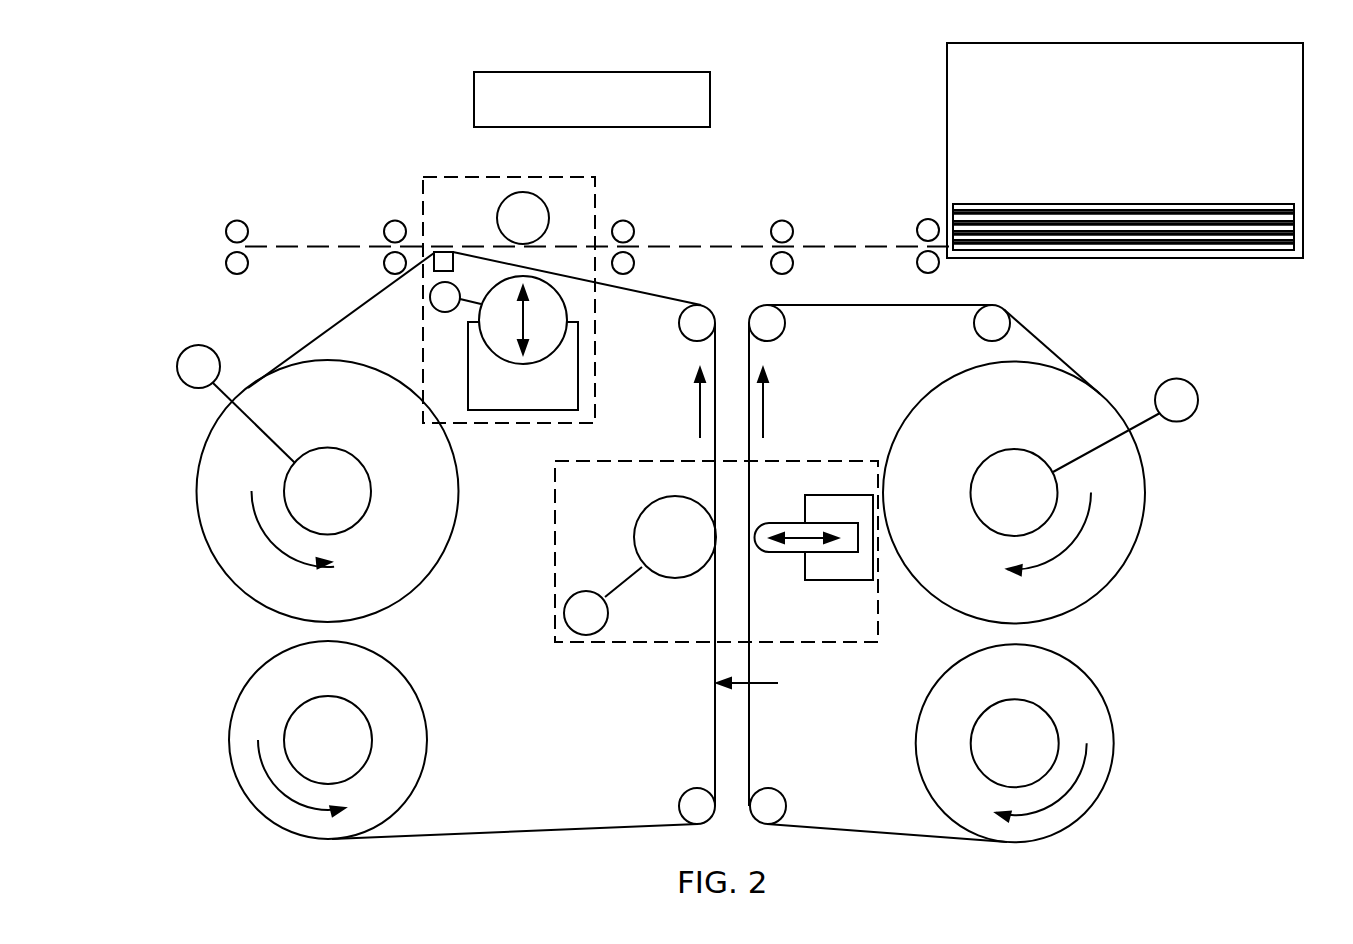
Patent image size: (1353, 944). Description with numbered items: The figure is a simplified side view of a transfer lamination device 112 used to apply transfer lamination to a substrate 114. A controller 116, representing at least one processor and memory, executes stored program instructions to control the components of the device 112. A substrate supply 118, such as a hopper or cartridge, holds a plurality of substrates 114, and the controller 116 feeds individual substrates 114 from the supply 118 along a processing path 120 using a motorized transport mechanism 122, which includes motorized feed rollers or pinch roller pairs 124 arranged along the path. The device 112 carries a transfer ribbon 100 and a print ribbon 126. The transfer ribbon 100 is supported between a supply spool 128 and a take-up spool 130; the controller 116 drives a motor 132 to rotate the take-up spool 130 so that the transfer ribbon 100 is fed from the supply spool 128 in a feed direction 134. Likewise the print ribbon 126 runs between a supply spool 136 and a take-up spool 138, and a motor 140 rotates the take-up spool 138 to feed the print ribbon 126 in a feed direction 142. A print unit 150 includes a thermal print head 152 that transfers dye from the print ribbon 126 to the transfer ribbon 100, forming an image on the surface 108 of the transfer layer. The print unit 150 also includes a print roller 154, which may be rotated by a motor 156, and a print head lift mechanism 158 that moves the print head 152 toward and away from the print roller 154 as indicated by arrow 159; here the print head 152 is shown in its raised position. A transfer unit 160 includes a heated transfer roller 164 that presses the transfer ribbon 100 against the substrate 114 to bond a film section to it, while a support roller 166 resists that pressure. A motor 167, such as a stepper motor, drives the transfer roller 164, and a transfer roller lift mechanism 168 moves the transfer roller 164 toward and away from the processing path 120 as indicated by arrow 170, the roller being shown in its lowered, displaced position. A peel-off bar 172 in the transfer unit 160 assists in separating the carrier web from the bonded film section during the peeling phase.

The transfer ribbon 100 is at (716, 728).
The surface of the transfer layer 108 is at (767, 688).
The transfer lamination device 112 is at (325, 80).
The substrate 114 is at (1182, 208).
The controller 116 is at (487, 72).
The substrate supply 118 is at (957, 95).
The processing path 120 is at (298, 245).
The transport mechanism 122 is at (838, 185).
The pinch roller pairs 124 is at (231, 221).
The print ribbon 126 is at (749, 737).
The supply spool 128 is at (252, 793).
The take-up spool 130 is at (229, 572).
The motor 132 is at (198, 351).
The feed direction 134 is at (699, 402).
The supply spool 136 is at (1085, 805).
The take-up spool 138 is at (1100, 578).
The motor 140 is at (1182, 420).
The feed direction 142 is at (764, 402).
The print unit 150 is at (840, 643).
The print head 152 is at (773, 525).
The print roller 154 is at (657, 507).
The motor 156 is at (570, 607).
The print head lift mechanism 158 is at (833, 573).
The arrow 159 is at (801, 542).
The transfer unit 160 is at (463, 177).
The transfer roller 164 is at (515, 358).
The roller 166 is at (523, 193).
The motor 167 is at (432, 304).
The transfer roller lift mechanism 168 is at (521, 407).
The arrow 170 is at (527, 316).
The peel-off bar 172 is at (440, 252).